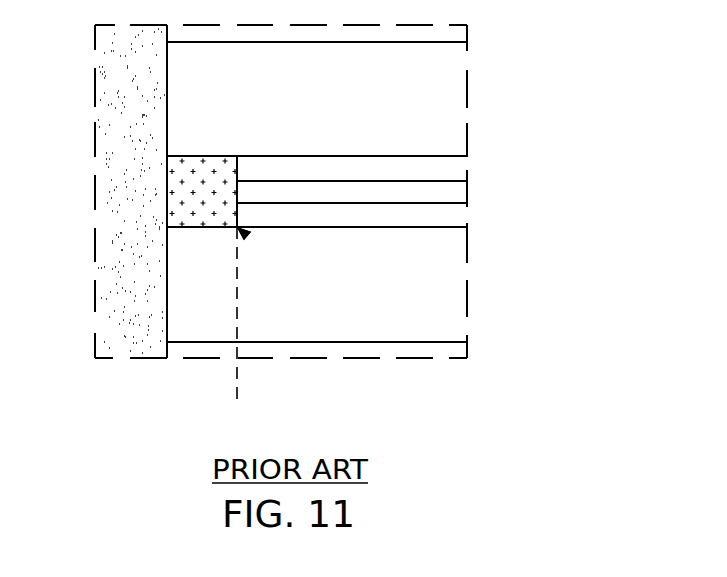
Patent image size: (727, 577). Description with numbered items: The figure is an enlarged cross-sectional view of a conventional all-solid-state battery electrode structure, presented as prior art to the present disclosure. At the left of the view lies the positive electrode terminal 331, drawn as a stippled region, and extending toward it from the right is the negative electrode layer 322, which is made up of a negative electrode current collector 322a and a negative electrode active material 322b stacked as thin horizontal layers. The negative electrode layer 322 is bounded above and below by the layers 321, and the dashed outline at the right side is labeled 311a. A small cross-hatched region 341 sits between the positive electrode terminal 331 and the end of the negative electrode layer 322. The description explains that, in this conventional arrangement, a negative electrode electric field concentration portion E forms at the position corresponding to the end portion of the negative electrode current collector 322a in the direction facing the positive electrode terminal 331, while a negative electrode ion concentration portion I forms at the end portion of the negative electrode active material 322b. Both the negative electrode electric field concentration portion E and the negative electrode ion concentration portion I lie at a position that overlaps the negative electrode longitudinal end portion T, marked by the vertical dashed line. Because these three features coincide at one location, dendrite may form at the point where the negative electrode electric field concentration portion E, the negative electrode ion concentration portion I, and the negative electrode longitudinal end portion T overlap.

The insulating layer 321 is at (455, 30).
The substrate edge portion 311a is at (455, 100).
The negative electrode layer 322 is at (396, 199).
The negative electrode current collector 322a is at (407, 197).
The negative electrode active material 322b is at (460, 167).
The positive electrode terminal 331 is at (118, 186).
The connection layer 341 is at (200, 215).
The negative electrode longitudinal end portion T is at (236, 328).
The negative electrode ion concentration portion I is at (245, 236).
The negative electrode electric field concentration portion E is at (248, 232).